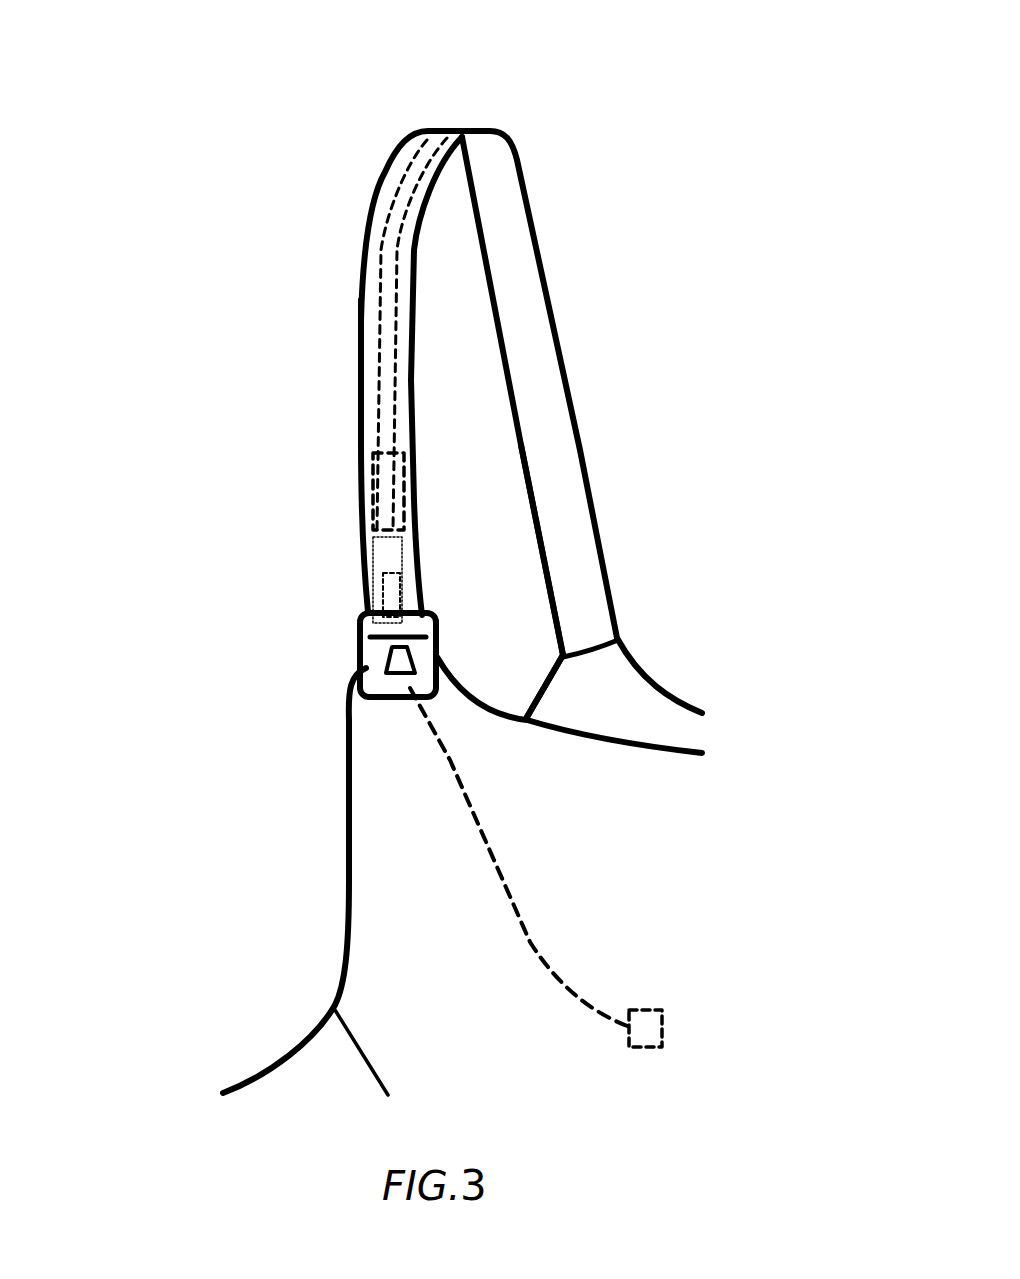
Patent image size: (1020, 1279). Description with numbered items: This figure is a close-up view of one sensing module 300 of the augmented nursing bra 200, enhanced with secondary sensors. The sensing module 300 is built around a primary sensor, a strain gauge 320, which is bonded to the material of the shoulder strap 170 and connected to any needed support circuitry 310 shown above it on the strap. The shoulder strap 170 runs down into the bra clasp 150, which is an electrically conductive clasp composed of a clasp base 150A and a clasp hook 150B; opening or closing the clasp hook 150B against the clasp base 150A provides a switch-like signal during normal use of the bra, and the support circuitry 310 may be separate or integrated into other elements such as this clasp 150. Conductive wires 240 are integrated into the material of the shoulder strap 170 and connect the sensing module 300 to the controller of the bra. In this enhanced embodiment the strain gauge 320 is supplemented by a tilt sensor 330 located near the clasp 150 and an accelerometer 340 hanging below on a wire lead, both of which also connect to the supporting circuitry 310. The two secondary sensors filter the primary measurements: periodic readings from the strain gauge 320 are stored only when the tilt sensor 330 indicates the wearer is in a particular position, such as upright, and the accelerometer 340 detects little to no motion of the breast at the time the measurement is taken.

The augmented nursing bra 200 is at (372, 110).
The conductive wires 240 is at (405, 227).
The sensing module 300 is at (296, 460).
The support circuitry 310 is at (380, 480).
The strain gauge 320 is at (400, 580).
The tilt sensor 330 is at (368, 640).
The shoulder strap 170 is at (361, 573).
The clasp 150 is at (403, 727).
The clasp base 150A is at (430, 633).
The clasp hook 150B is at (432, 653).
The accelerometer 340 is at (648, 1000).